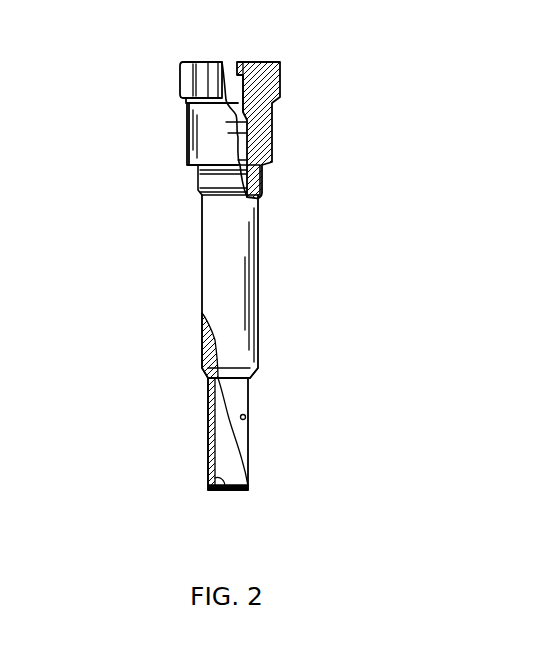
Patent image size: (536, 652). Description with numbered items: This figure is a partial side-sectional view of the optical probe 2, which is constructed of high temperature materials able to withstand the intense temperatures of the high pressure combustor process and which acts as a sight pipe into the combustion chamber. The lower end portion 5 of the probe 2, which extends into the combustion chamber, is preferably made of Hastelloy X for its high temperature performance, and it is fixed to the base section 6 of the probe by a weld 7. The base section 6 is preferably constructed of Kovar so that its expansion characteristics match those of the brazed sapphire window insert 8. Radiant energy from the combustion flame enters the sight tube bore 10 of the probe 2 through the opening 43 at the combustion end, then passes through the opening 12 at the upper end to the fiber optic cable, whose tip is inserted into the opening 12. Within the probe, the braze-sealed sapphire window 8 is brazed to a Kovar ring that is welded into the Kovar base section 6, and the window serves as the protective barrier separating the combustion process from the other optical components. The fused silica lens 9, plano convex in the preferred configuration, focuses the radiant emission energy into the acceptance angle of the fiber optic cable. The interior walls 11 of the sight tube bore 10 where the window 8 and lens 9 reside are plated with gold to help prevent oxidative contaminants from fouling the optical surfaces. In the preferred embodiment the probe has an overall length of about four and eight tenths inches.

The probe 2 is at (147, 254).
The end portion 5 is at (323, 373).
The base section 6 is at (323, 63).
The weld 7 is at (258, 370).
The sapphire window 8 is at (270, 161).
The fused silica lens 9 is at (273, 105).
The sight tube bore 10 is at (216, 492).
The interior walls 11 is at (223, 63).
The opening 12 is at (233, 70).
The opening 43 is at (232, 491).